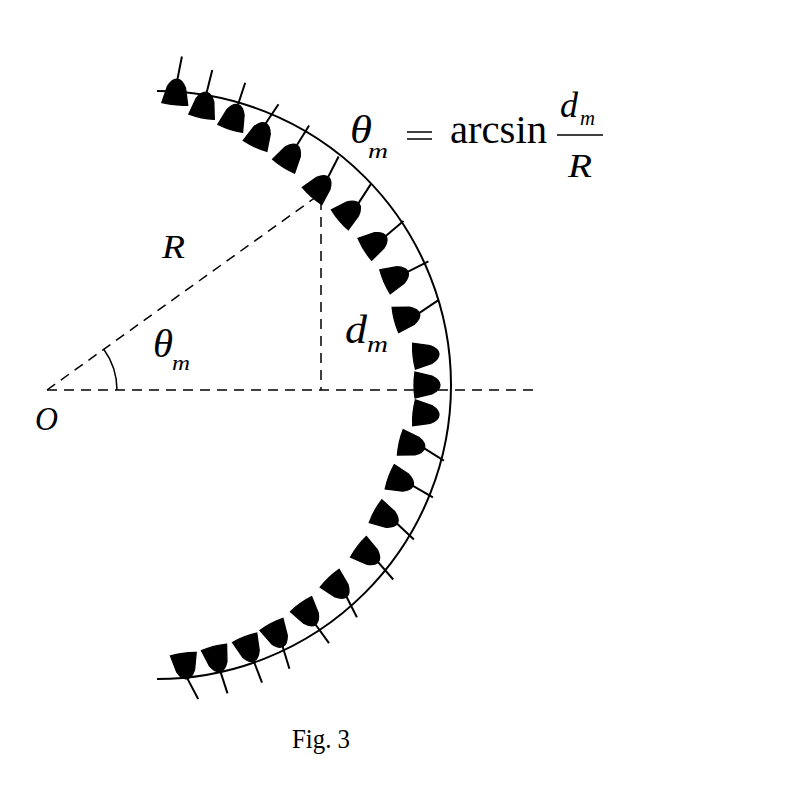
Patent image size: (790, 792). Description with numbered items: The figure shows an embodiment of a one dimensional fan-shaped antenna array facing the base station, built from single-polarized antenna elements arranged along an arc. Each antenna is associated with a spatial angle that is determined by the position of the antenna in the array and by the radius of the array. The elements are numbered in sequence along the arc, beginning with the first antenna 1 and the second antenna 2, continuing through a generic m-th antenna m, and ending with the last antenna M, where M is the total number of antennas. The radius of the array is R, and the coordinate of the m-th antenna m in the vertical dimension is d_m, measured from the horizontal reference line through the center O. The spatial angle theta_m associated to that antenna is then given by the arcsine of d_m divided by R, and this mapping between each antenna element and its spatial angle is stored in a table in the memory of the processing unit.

The first antenna 1 is at (174, 99).
The second antenna 2 is at (204, 110).
The m-th antenna m is at (293, 191).
The M-th antenna M is at (181, 657).